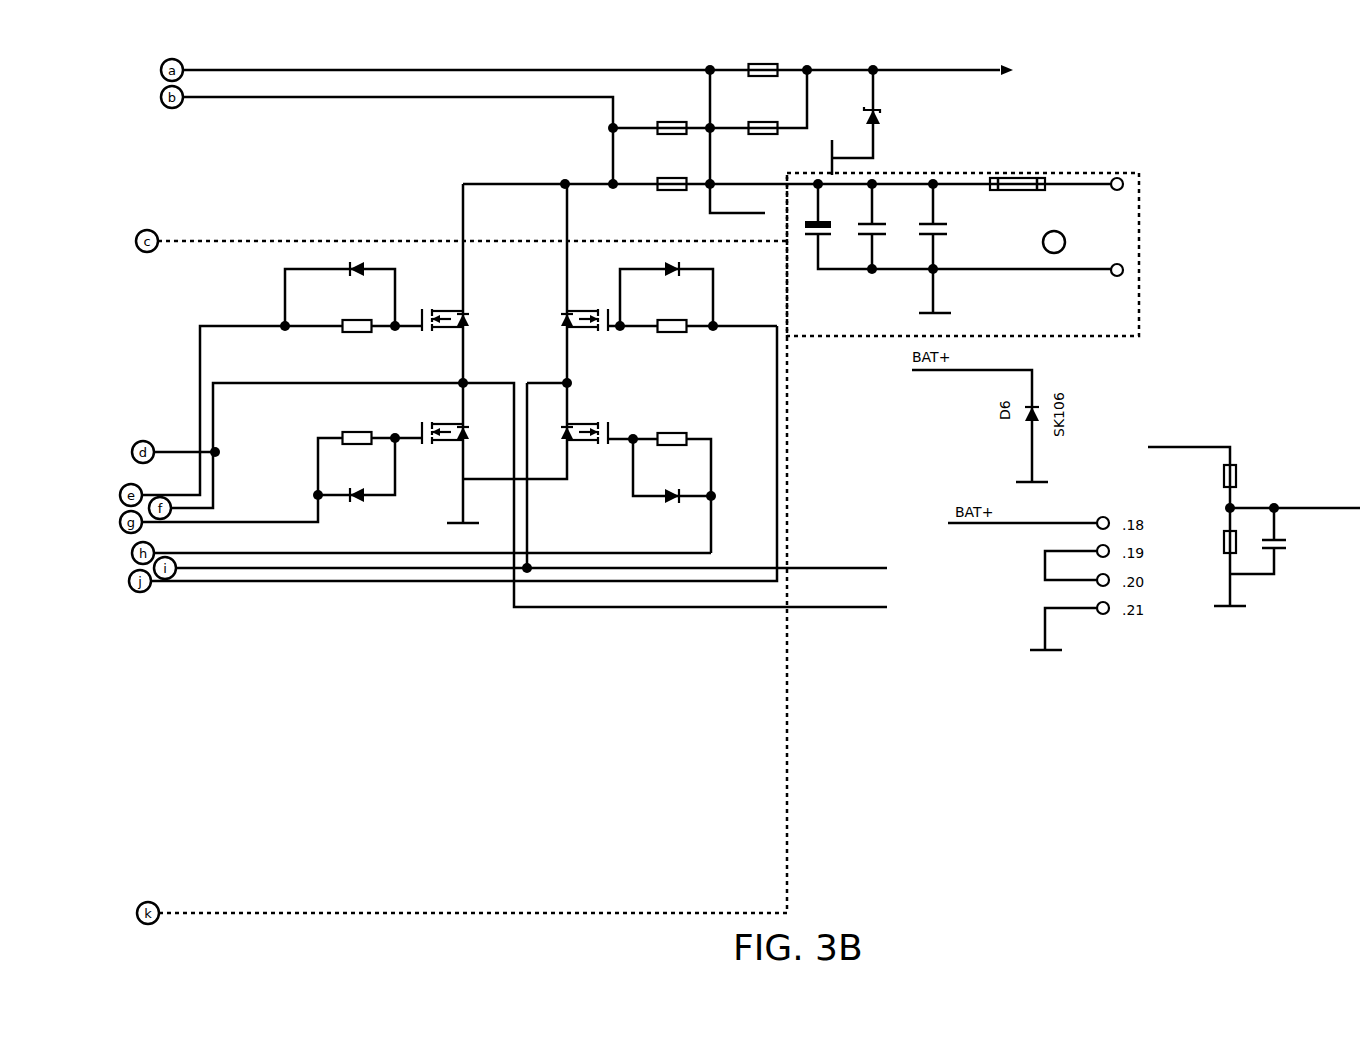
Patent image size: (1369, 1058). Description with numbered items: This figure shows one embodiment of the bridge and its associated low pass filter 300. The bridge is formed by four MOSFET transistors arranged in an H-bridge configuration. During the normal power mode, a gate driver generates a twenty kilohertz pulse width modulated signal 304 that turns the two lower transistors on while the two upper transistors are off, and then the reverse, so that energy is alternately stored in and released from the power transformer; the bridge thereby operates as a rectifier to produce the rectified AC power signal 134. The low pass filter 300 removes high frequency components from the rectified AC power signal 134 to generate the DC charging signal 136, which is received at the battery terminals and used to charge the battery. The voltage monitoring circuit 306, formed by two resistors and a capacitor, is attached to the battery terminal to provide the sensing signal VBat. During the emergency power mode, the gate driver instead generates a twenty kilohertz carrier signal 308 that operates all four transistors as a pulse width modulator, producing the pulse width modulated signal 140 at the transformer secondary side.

The rectified AC power signal 134 is at (570, 158).
The DC charging signal 136 is at (1090, 212).
The low pass filter 300 is at (1141, 190).
The pulse width modulated signal 304 is at (308, 342).
The voltage monitoring circuit 306 is at (1308, 458).
The carrier signal 308 is at (225, 309).
The pulse width modulated signal 140 is at (823, 584).